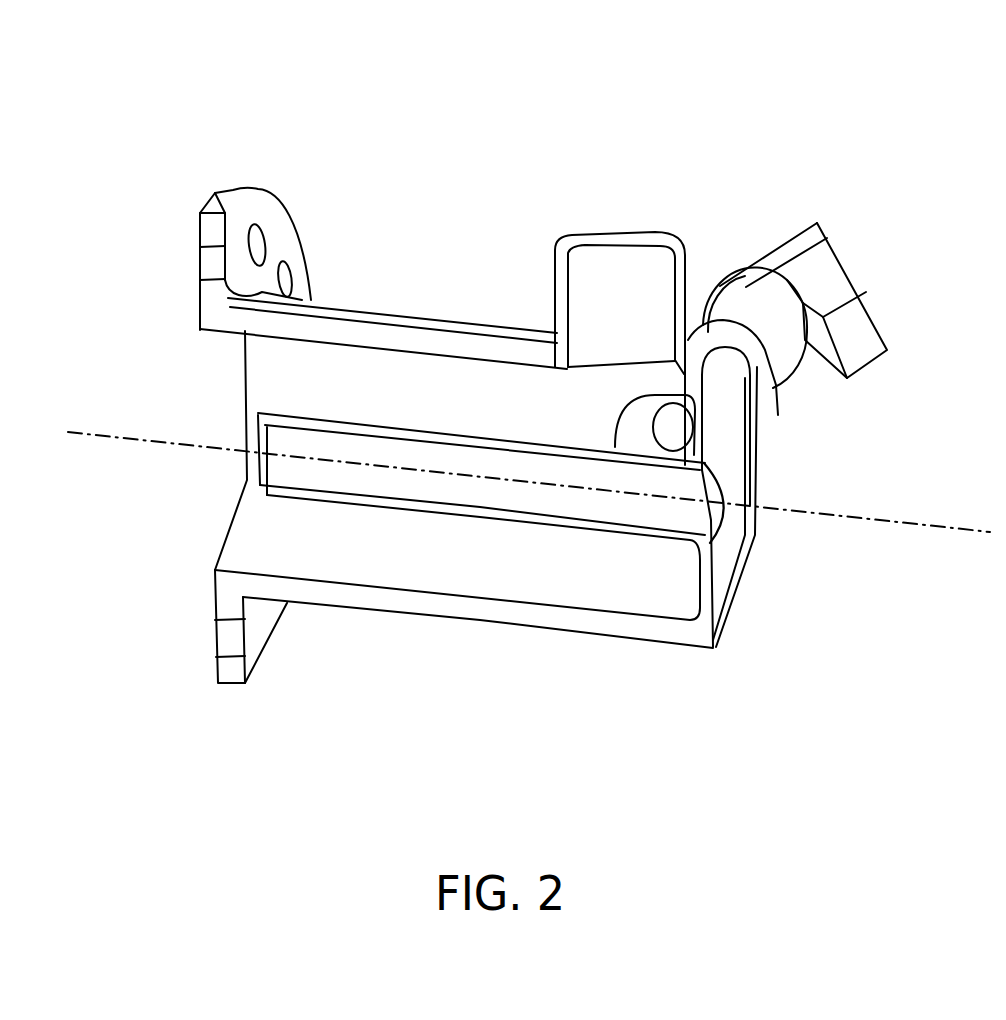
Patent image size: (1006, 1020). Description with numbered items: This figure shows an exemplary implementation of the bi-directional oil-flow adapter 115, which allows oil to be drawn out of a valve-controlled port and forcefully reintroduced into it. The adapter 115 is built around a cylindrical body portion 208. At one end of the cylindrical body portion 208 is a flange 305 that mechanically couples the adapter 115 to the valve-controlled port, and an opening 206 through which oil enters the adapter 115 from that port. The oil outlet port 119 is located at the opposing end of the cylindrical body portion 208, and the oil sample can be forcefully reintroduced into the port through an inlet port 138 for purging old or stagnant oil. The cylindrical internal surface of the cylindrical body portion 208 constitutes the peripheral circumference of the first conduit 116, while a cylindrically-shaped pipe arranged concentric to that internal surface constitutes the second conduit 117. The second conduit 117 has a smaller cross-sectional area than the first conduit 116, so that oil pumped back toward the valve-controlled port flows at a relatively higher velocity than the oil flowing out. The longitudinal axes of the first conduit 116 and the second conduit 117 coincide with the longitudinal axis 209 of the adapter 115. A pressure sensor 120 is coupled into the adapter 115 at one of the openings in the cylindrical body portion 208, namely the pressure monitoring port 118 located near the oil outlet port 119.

The bi-directional oil-flow adapter 115 is at (518, 138).
The first conduit 116 is at (521, 572).
The second conduit 117 is at (393, 428).
The pressure monitoring port 118 is at (768, 416).
The oil outlet port 119 is at (556, 293).
The pressure sensor 120 is at (727, 266).
The inlet port 138 is at (722, 483).
The opening 206 is at (186, 407).
The cylindrical body portion 208 is at (348, 303).
The longitudinal axis 209 is at (887, 520).
The flange 305 is at (276, 200).